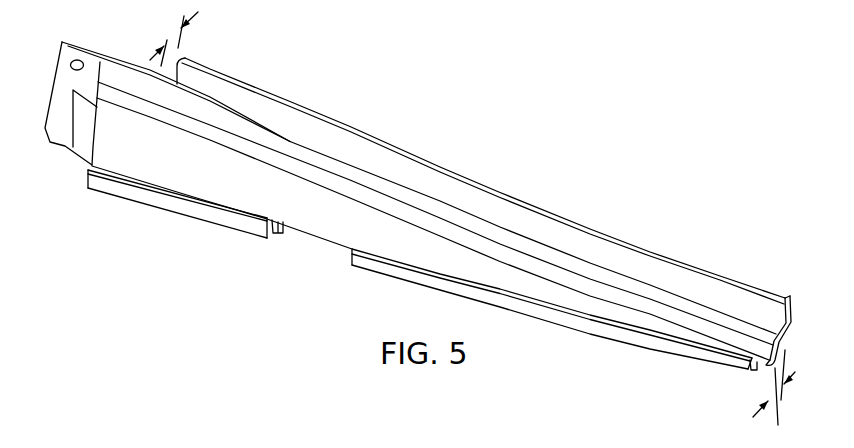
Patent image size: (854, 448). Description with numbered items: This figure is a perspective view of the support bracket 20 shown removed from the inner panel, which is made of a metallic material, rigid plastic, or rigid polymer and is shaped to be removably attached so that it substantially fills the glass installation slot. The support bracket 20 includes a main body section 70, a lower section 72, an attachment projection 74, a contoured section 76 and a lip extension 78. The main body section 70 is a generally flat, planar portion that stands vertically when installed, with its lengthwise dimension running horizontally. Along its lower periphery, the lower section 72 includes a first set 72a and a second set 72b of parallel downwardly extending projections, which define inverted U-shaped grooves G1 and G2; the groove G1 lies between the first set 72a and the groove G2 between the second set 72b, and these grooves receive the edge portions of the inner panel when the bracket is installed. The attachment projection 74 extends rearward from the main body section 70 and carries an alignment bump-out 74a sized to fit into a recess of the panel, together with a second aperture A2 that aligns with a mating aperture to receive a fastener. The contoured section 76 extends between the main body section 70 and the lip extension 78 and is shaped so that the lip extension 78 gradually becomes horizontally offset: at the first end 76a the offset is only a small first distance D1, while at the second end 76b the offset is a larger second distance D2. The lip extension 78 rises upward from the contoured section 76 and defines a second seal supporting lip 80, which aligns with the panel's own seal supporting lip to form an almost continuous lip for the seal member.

The support bracket 20 is at (420, 108).
The main body section 70 is at (338, 217).
The lower section 72 is at (572, 320).
The first set of parallel projections 72a is at (650, 343).
The second set of parallel projections 72b is at (168, 201).
The attachment projection 74 is at (65, 77).
The alignment bump-out 74a is at (83, 142).
The contoured section 76 is at (457, 238).
The first end of the contoured section 76a is at (786, 343).
The second end of the contoured section 76b is at (107, 60).
The lip extension 78 is at (657, 277).
The second seal supporting lip 80 is at (578, 222).
The groove G1 is at (752, 368).
The groove G2 is at (280, 226).
The first distance D1 is at (774, 397).
The second distance D2 is at (172, 32).
The second aperture A2 is at (58, 55).